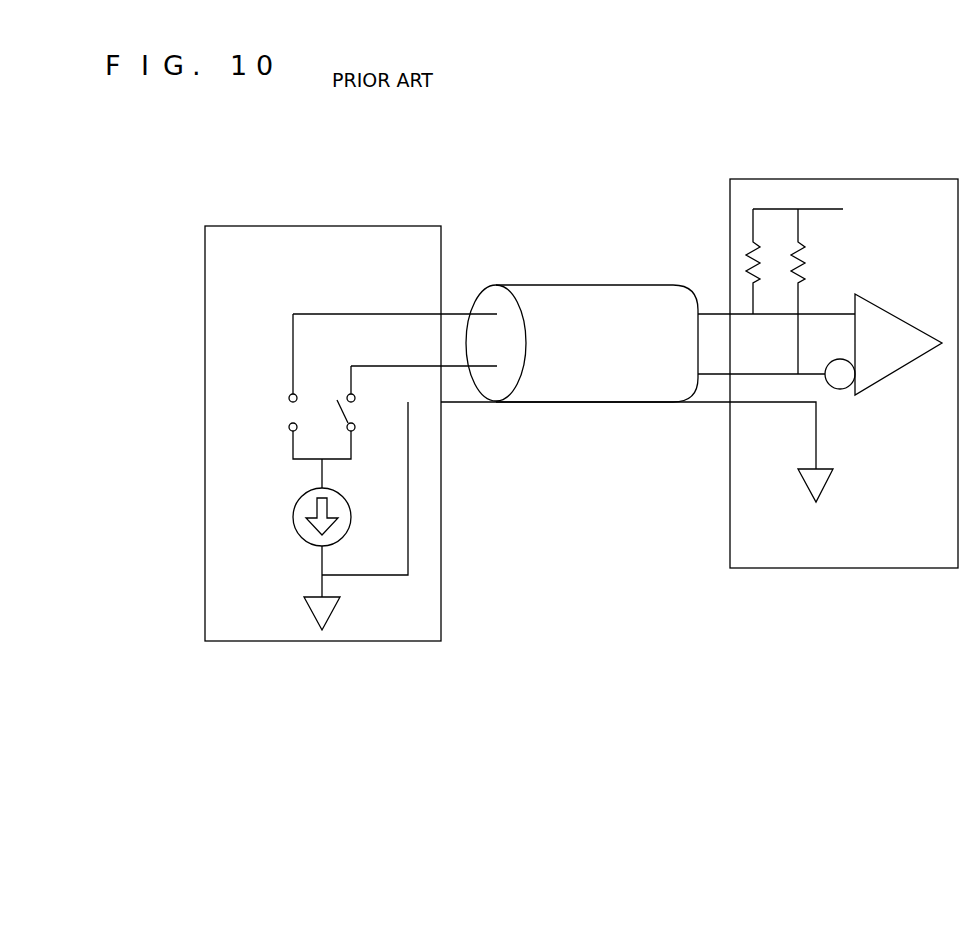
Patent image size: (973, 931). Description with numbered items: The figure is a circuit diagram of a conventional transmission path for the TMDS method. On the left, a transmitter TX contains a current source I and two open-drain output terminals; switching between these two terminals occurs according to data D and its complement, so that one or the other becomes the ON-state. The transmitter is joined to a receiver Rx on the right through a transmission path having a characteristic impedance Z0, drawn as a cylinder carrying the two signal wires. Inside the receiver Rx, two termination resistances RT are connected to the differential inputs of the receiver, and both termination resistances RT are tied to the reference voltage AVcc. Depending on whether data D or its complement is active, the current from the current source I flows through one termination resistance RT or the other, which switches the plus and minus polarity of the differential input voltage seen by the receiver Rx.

The transmitter TX is at (337, 226).
The receiver Rx is at (870, 178).
The current source I is at (293, 532).
The data D is at (374, 395).
The characteristic impedance Z0 is at (660, 343).
The termination resistance RT is at (786, 291).
The reference voltage AVcc is at (801, 201).